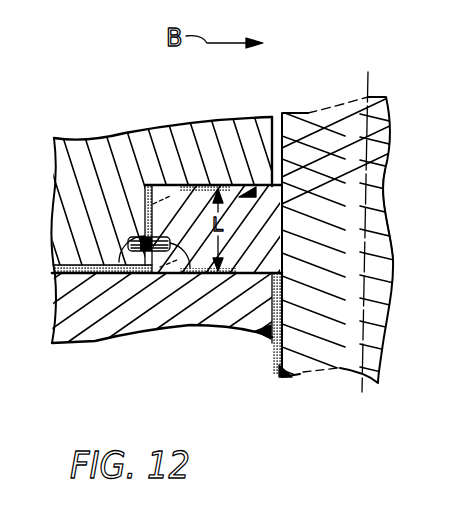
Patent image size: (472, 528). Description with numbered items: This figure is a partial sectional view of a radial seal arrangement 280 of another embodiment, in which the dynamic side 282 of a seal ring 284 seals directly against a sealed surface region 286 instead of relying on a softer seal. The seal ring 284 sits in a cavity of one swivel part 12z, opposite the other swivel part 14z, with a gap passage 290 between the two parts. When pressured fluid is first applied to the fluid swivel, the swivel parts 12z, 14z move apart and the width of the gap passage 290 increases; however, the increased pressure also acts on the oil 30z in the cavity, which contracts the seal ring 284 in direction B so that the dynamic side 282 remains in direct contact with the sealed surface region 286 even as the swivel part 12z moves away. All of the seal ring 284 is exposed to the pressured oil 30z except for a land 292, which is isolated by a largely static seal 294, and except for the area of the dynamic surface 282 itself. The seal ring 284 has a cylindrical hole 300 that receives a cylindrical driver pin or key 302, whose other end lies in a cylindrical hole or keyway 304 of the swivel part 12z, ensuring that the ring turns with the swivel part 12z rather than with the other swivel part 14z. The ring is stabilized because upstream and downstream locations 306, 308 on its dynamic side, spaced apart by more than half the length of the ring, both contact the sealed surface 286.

The swivel part 12z is at (111, 341).
The swivel part 14z is at (290, 376).
The oil 30z is at (82, 273).
The radial seal arrangement 280 is at (210, 100).
The dynamic side of seal ring 282 is at (283, 207).
The seal ring 284 is at (172, 168).
The sealed surface region 286 is at (275, 113).
The gap passage 290 is at (271, 343).
The land 292 is at (343, 104).
The static seal 294 is at (249, 183).
The cylindrical hole 300 is at (188, 274).
The driver pin or key 302 is at (150, 274).
The cylindrical hole or keyway 304 is at (88, 275).
The upstream location on dynamic side 306 is at (370, 153).
The downstream location on dynamic side 308 is at (283, 261).